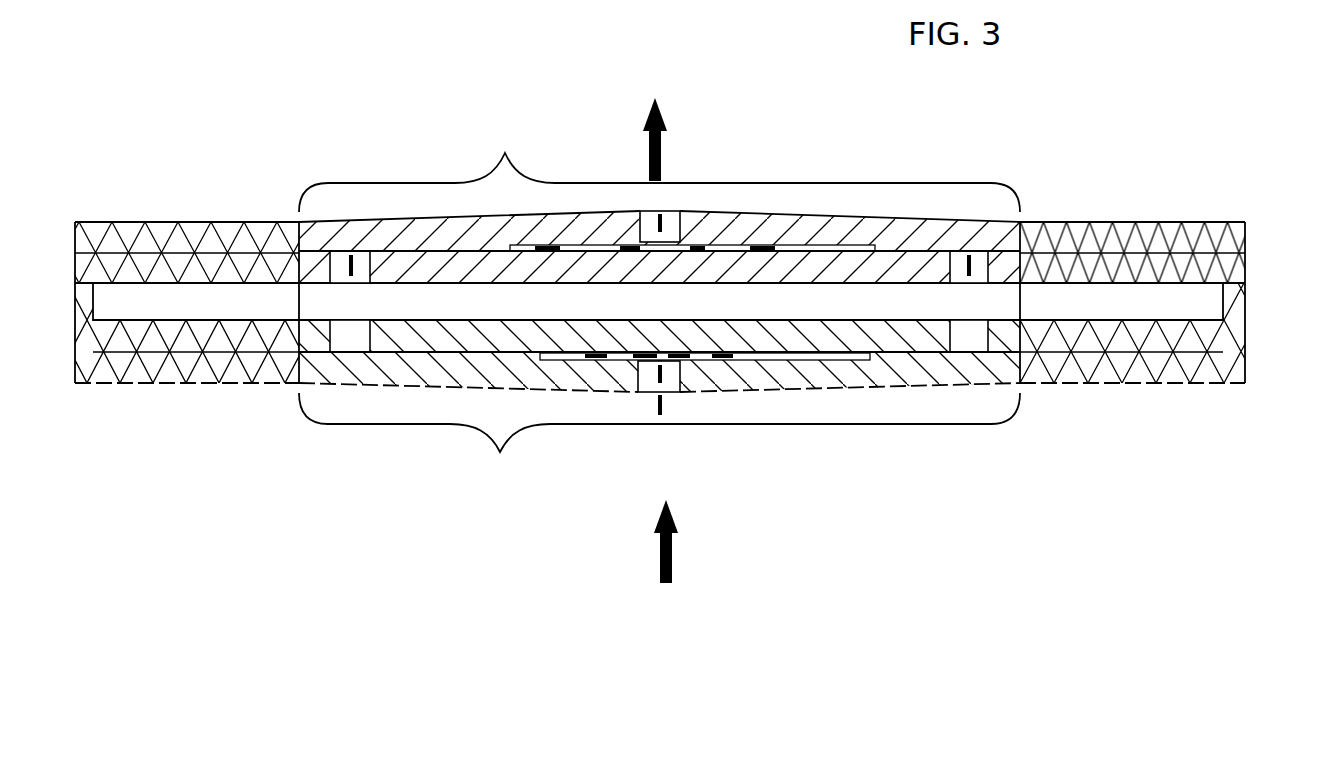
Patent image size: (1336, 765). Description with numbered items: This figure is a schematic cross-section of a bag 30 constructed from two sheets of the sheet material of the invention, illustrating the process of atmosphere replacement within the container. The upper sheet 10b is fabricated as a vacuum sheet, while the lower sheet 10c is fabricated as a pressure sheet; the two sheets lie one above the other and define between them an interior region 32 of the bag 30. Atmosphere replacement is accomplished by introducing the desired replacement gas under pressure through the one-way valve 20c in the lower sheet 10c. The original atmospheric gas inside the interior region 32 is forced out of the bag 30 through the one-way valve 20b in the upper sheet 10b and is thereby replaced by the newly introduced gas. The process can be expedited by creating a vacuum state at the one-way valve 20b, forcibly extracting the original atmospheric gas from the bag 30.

The bag 30 is at (1157, 130).
The upper sheet 10b is at (1234, 209).
The lower sheet 10c is at (1171, 390).
The one-way valve 20b is at (505, 152).
The one-way valve 20c is at (500, 452).
The interior region 32 is at (800, 305).